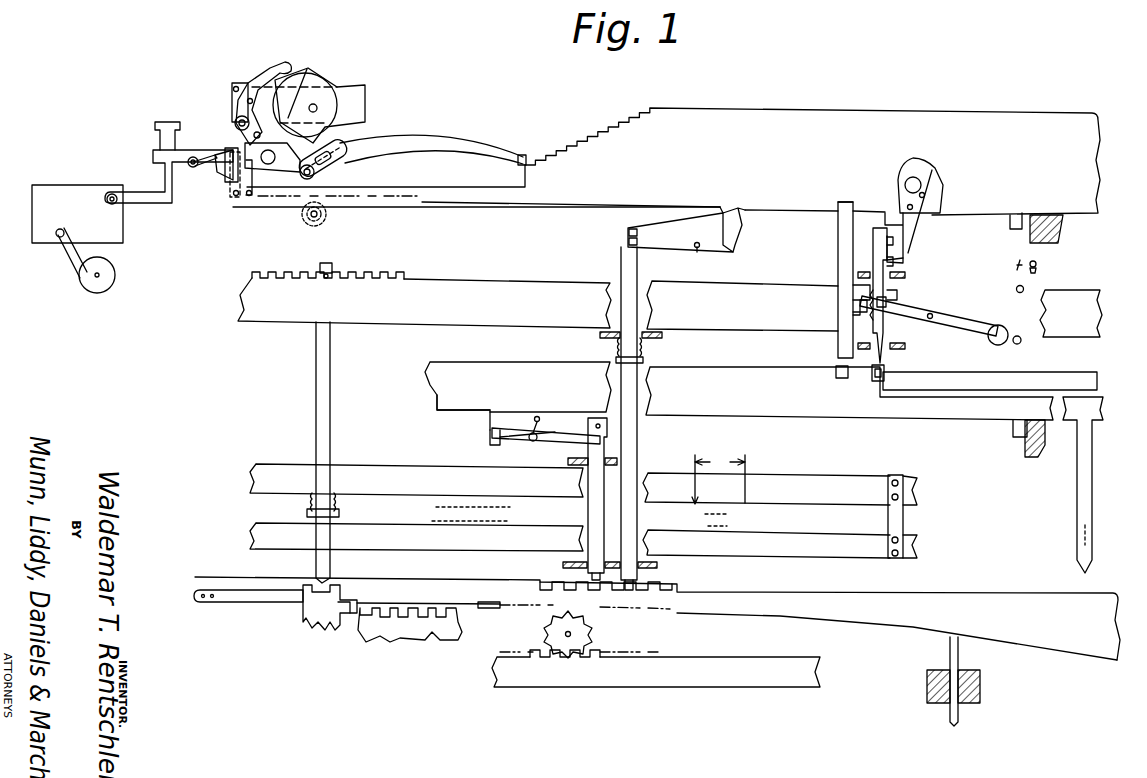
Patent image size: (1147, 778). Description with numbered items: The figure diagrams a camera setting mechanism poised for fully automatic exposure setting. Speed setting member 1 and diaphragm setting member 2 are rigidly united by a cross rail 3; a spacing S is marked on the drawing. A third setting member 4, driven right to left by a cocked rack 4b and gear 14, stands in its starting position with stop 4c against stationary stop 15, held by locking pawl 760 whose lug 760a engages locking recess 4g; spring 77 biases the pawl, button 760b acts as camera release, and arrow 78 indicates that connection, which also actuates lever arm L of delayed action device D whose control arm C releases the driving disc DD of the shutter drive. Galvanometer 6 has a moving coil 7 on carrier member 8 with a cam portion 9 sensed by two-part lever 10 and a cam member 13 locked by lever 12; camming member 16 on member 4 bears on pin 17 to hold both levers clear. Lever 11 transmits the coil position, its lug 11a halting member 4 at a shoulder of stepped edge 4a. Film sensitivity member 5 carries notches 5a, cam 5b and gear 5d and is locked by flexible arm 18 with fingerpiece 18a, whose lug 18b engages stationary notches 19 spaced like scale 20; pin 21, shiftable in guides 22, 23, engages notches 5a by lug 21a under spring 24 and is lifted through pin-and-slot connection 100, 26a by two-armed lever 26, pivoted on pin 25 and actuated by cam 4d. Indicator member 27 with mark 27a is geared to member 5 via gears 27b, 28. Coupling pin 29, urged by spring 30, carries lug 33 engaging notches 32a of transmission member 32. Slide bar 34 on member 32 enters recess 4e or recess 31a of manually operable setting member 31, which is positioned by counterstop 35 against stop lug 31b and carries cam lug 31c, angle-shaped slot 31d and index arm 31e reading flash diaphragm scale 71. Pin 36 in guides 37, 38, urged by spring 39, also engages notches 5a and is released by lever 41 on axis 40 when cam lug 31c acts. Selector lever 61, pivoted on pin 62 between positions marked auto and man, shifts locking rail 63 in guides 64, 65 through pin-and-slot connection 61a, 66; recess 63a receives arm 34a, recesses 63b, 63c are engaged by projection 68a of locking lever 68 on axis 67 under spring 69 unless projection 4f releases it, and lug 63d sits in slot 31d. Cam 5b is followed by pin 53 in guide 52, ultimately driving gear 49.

The exposure time setting member 1 is at (808, 480).
The diaphragm setting member 2 is at (830, 558).
The cross rail 3 is at (905, 524).
The third setting member 4 is at (760, 125).
The stepped setting edge 4a is at (615, 125).
The rack 4b is at (410, 203).
The stop 4c is at (1010, 225).
The cam 4d is at (738, 222).
The recess 4e is at (845, 200).
The projection 4f is at (880, 212).
The film sensitivity setting member 5 is at (745, 606).
The detent notches 5a is at (660, 592).
The cam 5b is at (918, 620).
The gear 5d is at (488, 610).
The galvanometer 6 is at (361, 75).
The moving coil 7 is at (340, 100).
The carrier member 8 is at (348, 112).
The cam portion 9 is at (343, 145).
The sensing lever 10 is at (285, 178).
The lever 11 is at (438, 140).
The abutment lug 11a is at (523, 154).
The locking lever 12 is at (262, 73).
The cam member 13 is at (283, 98).
The gear 14 is at (310, 228).
The stationary stop 15 is at (1058, 230).
The camming member 16 is at (242, 190).
The pin 17 is at (249, 200).
The flexible arm 18 is at (258, 598).
The fingerpiece 18a is at (320, 625).
The locking lug 18b is at (352, 614).
The detent notches 19 is at (420, 620).
The film sensitivity scale 20 is at (686, 712).
The locking pin 21 is at (640, 433).
The lug 21a is at (629, 592).
The guide 22 is at (658, 566).
The guide 23 is at (655, 342).
The compression coil spring 24 is at (618, 348).
The pin 25 is at (696, 250).
The two-armed lever 26 is at (678, 243).
The pin-and-slot connection 26a is at (640, 232).
The setting member 27 is at (548, 680).
The index mark 27a is at (665, 685).
The gear 27b is at (592, 663).
The gear 28 is at (548, 634).
The coupling pin 29 is at (314, 386).
The compression coil spring 30 is at (310, 500).
The manually operable setting member 31 is at (805, 412).
The recess 31a is at (842, 385).
The stop lug 31b is at (1012, 432).
The cam lug 31c is at (470, 420).
The angle-shaped slot 31d is at (1020, 372).
The index arm 31e is at (1077, 513).
The transmission member 32 is at (455, 292).
The locking notches 32a is at (378, 274).
The locking lug 33 is at (328, 264).
The slide bar 34 is at (840, 240).
The arm 34a is at (838, 300).
The counterstop 35 is at (1035, 458).
The locking pin 36 is at (590, 512).
The guide 37 is at (562, 566).
The guide 38 is at (620, 460).
The spring 39 is at (540, 417).
The axis 40 is at (530, 444).
The two-armed lever 41 is at (496, 447).
The gear 49 is at (230, 185).
The guide 52 is at (982, 692).
The cam follower pin 53 is at (960, 655).
The selector lever 61 is at (935, 318).
The pin-and-slot connection 61a is at (853, 305).
The stationary pin 62 is at (933, 313).
The locking rail 63 is at (880, 325).
The recess 63a is at (870, 290).
The recess 63b is at (887, 240).
The recess 63c is at (895, 260).
The lug 63d is at (876, 385).
The guide 64 is at (895, 346).
The guide 65 is at (905, 276).
The pin-and-slot connection 66 is at (887, 298).
The fixed axis 67 is at (915, 183).
The locking lever 68 is at (905, 222).
The projection 68a is at (905, 258).
The spring 69 is at (930, 183).
The diaphragm scale 71 is at (878, 592).
The spring 77 is at (197, 152).
The arrow 78 is at (172, 110).
The pin-and-slot connection 100 is at (628, 240).
The locking pawl 760 is at (165, 170).
The lug 760a is at (225, 170).
The button 760b is at (160, 140).
The delayed action device D is at (52, 185).
The control arm C is at (55, 258).
The driving disc DD is at (113, 282).
The release lever arm L is at (138, 210).
The spacing S is at (718, 479).
The man setting position man is at (1020, 276).
The auto setting position auto is at (1014, 350).
The locking recess 4g is at (1071, 313).